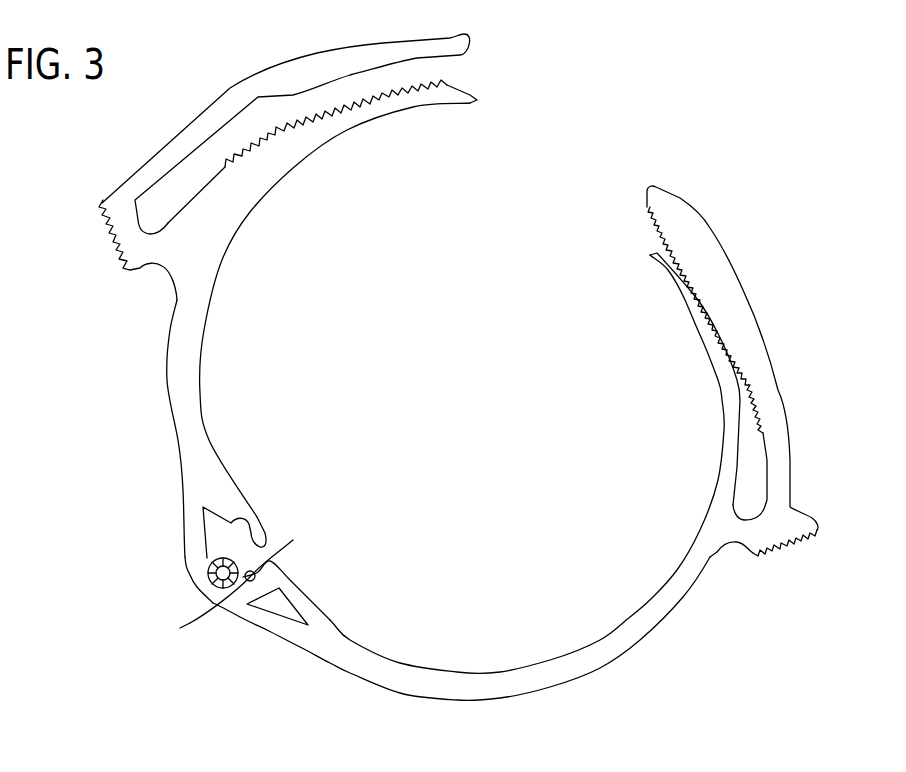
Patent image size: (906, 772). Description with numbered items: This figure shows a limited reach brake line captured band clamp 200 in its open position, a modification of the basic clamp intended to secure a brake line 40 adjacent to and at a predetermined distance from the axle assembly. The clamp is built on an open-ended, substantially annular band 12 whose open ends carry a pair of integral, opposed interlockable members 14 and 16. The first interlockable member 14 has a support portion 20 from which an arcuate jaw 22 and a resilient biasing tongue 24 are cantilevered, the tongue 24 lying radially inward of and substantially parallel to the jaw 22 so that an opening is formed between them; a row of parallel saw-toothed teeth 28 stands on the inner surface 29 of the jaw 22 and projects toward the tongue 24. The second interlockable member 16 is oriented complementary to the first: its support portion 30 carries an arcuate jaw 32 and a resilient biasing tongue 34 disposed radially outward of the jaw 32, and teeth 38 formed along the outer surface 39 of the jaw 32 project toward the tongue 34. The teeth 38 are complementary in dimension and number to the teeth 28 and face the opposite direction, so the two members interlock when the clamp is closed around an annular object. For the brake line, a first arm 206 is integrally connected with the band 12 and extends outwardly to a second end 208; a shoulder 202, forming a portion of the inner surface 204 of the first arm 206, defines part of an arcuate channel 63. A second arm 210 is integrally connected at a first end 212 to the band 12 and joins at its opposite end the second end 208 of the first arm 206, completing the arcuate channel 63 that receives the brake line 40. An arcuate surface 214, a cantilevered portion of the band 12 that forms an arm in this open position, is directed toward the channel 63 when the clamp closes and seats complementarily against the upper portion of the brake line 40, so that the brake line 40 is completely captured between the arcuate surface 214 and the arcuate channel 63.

The annular band 12 is at (265, 310).
The first interlockable member 14 is at (735, 388).
The second interlockable member 16 is at (327, 118).
The support portion 20 is at (771, 533).
The arcuate jaw 22 is at (693, 236).
The resilient biasing tongue 24 is at (693, 304).
The teeth 28 is at (667, 233).
The inner surface 29 is at (757, 460).
The support portion 30 is at (136, 242).
The arcuate jaw 32 is at (360, 134).
The resilient biasing tongue 34 is at (328, 63).
The teeth 38 is at (440, 84).
The outer surface 39 is at (480, 90).
The brake line 40 is at (256, 574).
The arcuate channel 63 is at (209, 578).
The limited reach brake line captured band clamp 200 is at (380, 496).
The shoulder 202 is at (165, 634).
The inner surface 204 is at (258, 582).
The first arm 206 is at (264, 655).
The second end 208 is at (237, 598).
The second arm 210 is at (208, 536).
The first end 212 is at (180, 459).
The arcuate surface 214 is at (244, 523).